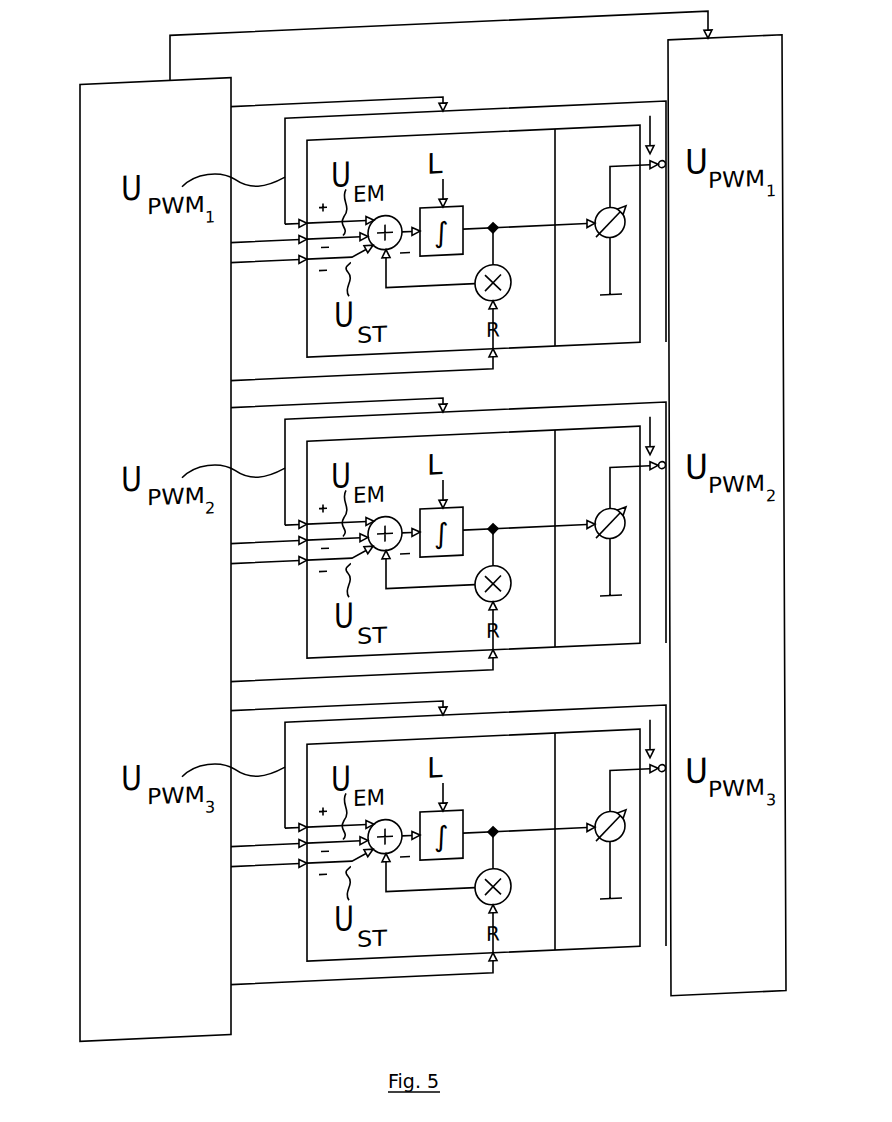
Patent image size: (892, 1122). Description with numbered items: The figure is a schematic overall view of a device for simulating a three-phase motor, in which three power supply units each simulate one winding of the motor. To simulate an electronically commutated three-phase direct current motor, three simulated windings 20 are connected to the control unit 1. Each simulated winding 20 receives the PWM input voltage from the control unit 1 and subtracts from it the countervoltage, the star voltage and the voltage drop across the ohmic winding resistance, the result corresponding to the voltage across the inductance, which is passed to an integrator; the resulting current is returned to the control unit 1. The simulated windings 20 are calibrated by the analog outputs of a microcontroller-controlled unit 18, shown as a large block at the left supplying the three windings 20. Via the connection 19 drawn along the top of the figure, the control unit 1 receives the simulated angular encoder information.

The control unit 1 is at (765, 612).
The microcontroller-controlled unit 18 is at (81, 322).
The connection 19 is at (168, 74).
The simulated windings 20 is at (502, 175).